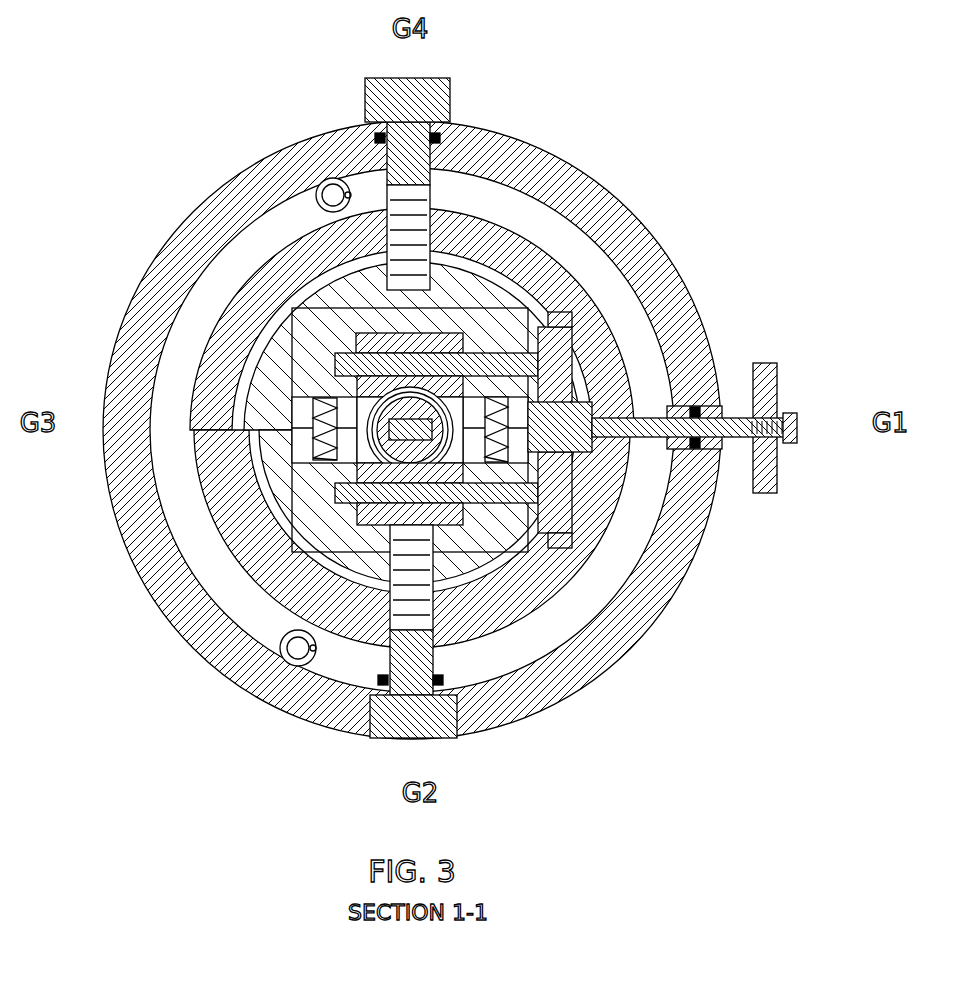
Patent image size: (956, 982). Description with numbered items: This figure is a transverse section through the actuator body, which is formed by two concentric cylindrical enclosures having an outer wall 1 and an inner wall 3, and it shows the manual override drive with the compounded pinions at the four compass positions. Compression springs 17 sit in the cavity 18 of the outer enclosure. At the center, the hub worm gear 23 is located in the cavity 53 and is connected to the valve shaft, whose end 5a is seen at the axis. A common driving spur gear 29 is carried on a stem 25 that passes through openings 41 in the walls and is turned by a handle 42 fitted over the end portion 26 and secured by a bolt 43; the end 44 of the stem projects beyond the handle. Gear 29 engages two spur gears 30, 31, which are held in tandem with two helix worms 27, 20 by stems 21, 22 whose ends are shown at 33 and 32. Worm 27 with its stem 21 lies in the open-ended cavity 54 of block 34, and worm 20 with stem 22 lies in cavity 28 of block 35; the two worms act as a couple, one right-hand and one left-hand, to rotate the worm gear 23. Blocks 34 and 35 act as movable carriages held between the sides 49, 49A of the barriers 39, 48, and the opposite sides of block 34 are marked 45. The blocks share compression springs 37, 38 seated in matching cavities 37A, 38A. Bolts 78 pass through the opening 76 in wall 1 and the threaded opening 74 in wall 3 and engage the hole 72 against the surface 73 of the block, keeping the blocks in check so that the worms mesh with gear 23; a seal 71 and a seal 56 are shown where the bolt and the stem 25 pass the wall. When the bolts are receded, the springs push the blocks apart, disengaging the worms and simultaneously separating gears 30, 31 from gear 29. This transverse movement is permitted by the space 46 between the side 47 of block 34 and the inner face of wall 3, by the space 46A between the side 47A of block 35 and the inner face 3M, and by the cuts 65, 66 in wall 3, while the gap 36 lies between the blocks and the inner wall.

The wall 1 is at (626, 195).
The wall 3 is at (142, 548).
The inner face 3M is at (237, 182).
The bearing 5a is at (300, 487).
The compression springs 17 is at (345, 138).
The cavity 18 is at (620, 277).
The worm 20 is at (460, 598).
The stem 21 is at (335, 365).
The stem 22 is at (292, 540).
The worm gear 23 is at (310, 395).
The stem 25 is at (700, 455).
The end portion 26 is at (777, 393).
The worm 27 is at (475, 290).
The cavity 28 is at (298, 630).
The driving spur gear 29 is at (600, 418).
The spur gear 30 is at (560, 390).
The spur gear 31 is at (600, 525).
The end 32 is at (240, 500).
The end 33 is at (240, 365).
The block 34 is at (317, 310).
The block 35 is at (280, 608).
The gap 36 is at (190, 430).
The compression spring 37 is at (292, 462).
The cavity 37A is at (300, 410).
The compression spring 38 is at (613, 482).
The cavity 38A is at (513, 270).
The barrier 39 is at (260, 318).
The openings 41 is at (760, 370).
The handle 42 is at (777, 483).
The bolt 43 is at (807, 435).
The shaft end 44 is at (733, 457).
The sides 45 is at (546, 243).
The space 46 is at (300, 240).
The space 46A is at (470, 600).
The side 47 is at (330, 273).
The side 47A is at (593, 677).
The barrier 48 is at (572, 272).
The side 49 is at (300, 450).
The side 49A is at (545, 520).
The cavity 53 is at (530, 592).
The cavity 54 is at (505, 330).
The seal 56 is at (700, 405).
The cut 65 is at (578, 572).
The cut 66 is at (560, 315).
The seal 71 is at (380, 138).
The hole 72 is at (470, 230).
The surface 73 is at (356, 340).
The threaded opening 74 is at (448, 207).
The opening 76 is at (487, 143).
The bolt 78 is at (372, 124).